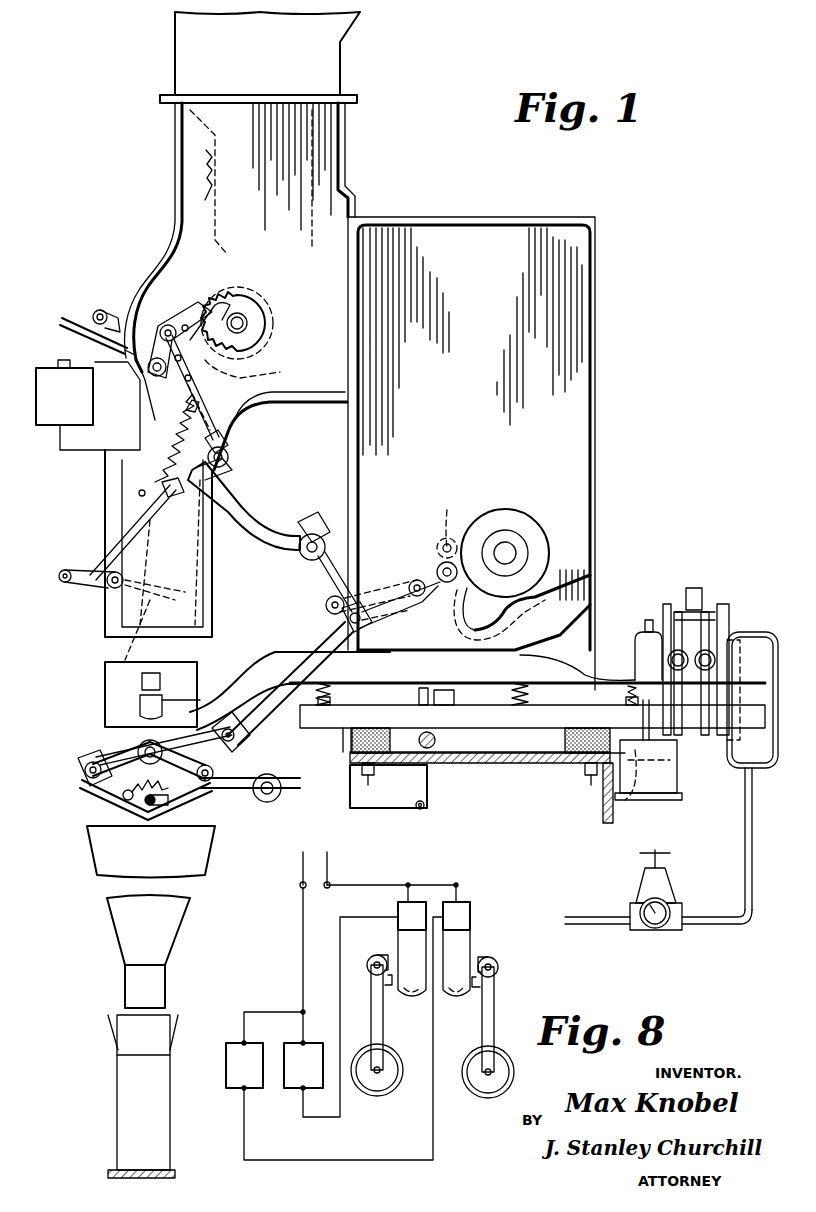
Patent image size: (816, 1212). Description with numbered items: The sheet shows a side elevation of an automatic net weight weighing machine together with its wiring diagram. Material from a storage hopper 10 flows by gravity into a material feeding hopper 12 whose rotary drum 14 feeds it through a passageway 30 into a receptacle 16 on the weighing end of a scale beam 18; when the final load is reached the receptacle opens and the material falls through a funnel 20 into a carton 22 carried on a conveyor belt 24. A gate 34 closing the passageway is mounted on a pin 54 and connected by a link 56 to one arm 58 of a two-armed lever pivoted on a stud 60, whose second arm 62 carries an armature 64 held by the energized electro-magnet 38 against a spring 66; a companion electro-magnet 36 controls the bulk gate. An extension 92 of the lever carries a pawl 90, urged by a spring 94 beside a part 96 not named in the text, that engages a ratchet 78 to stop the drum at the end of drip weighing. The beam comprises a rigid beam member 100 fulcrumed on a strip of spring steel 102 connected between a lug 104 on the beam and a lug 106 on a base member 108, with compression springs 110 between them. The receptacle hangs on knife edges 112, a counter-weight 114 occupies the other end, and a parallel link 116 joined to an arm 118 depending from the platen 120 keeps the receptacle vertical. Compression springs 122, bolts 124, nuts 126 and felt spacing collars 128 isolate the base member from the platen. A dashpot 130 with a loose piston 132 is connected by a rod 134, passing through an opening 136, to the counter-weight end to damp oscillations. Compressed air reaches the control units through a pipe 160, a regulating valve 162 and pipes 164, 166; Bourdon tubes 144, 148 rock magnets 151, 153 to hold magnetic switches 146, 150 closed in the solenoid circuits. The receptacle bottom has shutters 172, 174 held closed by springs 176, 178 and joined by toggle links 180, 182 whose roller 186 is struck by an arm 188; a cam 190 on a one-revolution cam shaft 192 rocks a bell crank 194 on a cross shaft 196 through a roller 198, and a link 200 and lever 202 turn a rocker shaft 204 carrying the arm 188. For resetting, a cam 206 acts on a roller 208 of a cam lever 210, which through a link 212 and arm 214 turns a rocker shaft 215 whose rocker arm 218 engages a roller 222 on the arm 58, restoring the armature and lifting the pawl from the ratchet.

In FIG. 1, the storage hopper 10 is at (335, 63).
In FIG. 1, the material feeding hopper 12 is at (160, 252).
In FIG. 1, the rotary drum 14 is at (262, 300).
In FIG. 1, the receptacle 16 is at (105, 664).
In FIG. 1, the scale beam 18 is at (265, 650).
In FIG. 1, the funnel 20 is at (118, 933).
In FIG. 1, the carton 22 is at (120, 1088).
In FIG. 1, the conveyor belt 24 is at (105, 1172).
In FIG. 1, the passageway 30 is at (226, 493).
In FIG. 1, the gate 34 is at (136, 630).
In FIG. 8, the electro-magnet 36 is at (244, 1065).
In FIG. 1, the electro-magnet 38 is at (88, 405).
In FIG. 8, the electro-magnet 38 is at (303, 1065).
In FIG. 1, the pin 54 is at (110, 590).
In FIG. 1, the link 56 is at (118, 540).
In FIG. 1, the arm 58 is at (215, 375).
In FIG. 1, the stud 60 is at (150, 374).
In FIG. 1, the second arm 62 is at (100, 310).
In FIG. 1, the armature 64 is at (72, 330).
In FIG. 1, the spring 66 is at (150, 468).
In FIG. 1, the ratchet 78 is at (236, 290).
In FIG. 1, the pawl 90 is at (195, 300).
In FIG. 1, the extension 92 is at (168, 325).
In FIG. 1, the spring 94 is at (180, 395).
In FIG. 1, the agitator 96 is at (200, 215).
In FIG. 1, the rigid beam member 100 is at (600, 668).
In FIG. 1, the strip of thin spring steel 102 is at (430, 690).
In FIG. 1, the lug 104 is at (455, 700).
In FIG. 1, the lug 106 is at (475, 700).
In FIG. 1, the base member 108 is at (480, 742).
In FIG. 1, the compression springs 110 is at (330, 683).
In FIG. 1, the knife edges 112 is at (165, 690).
In FIG. 1, the counter-weight 114 is at (640, 632).
In FIG. 1, the parallel link 116 is at (360, 808).
In FIG. 1, the arm 118 is at (428, 800).
In FIG. 1, the platen 120 is at (505, 763).
In FIG. 1, the compression springs 122 is at (348, 740).
In FIG. 1, the bolts 124 is at (372, 690).
In FIG. 1, the nuts 126 is at (375, 770).
In FIG. 1, the felt spacing collar 128 is at (352, 740).
In FIG. 1, the dashpot 130 is at (665, 800).
In FIG. 1, the piston 132 is at (615, 790).
In FIG. 1, the rod 134 is at (672, 765).
In FIG. 1, the opening 136 is at (680, 735).
In FIG. 8, the Bourdon tube 144 is at (515, 1072).
In FIG. 8, the magnetic switch 146 is at (472, 915).
In FIG. 8, the Bourdon tube 148 is at (385, 1095).
In FIG. 8, the magnetic switch 150 is at (400, 915).
In FIG. 8, the magnet 151 is at (498, 962).
In FIG. 8, the magnet 153 is at (370, 958).
In FIG. 1, the pipe 160 is at (745, 873).
In FIG. 1, the regulating valve 162 is at (645, 888).
In FIG. 1, the pipe 164 is at (745, 780).
In FIG. 1, the pipe 166 is at (762, 632).
In FIG. 1, the shutter 172 is at (110, 805).
In FIG. 1, the shutter 174 is at (208, 835).
In FIG. 1, the spring 176 is at (125, 803).
In FIG. 1, the spring 178 is at (160, 808).
In FIG. 1, the toggle link 180 is at (80, 762).
In FIG. 1, the toggle link 182 is at (245, 790).
In FIG. 1, the roller 186 is at (140, 745).
In FIG. 1, the arm 188 is at (150, 740).
In FIG. 1, the cam 190 is at (512, 510).
In FIG. 1, the cam shaft 192 is at (515, 553).
In FIG. 1, the bell crank 194 is at (466, 580).
In FIG. 1, the cross shaft 196 is at (432, 748).
In FIG. 1, the roller 198 is at (436, 562).
In FIG. 1, the link 200 is at (325, 600).
In FIG. 1, the lever 202 is at (250, 742).
In FIG. 1, the rocker shaft 204 is at (258, 800).
In FIG. 1, the cam 206 is at (572, 620).
In FIG. 1, the roller 208 is at (448, 505).
In FIG. 1, the cam lever 210 is at (430, 612).
In FIG. 1, the link 212 is at (378, 585).
In FIG. 1, the arm 214 is at (325, 580).
In FIG. 1, the rocker shaft 215 is at (300, 550).
In FIG. 1, the rocker arm 218 is at (275, 510).
In FIG. 1, the roller 222 is at (230, 452).